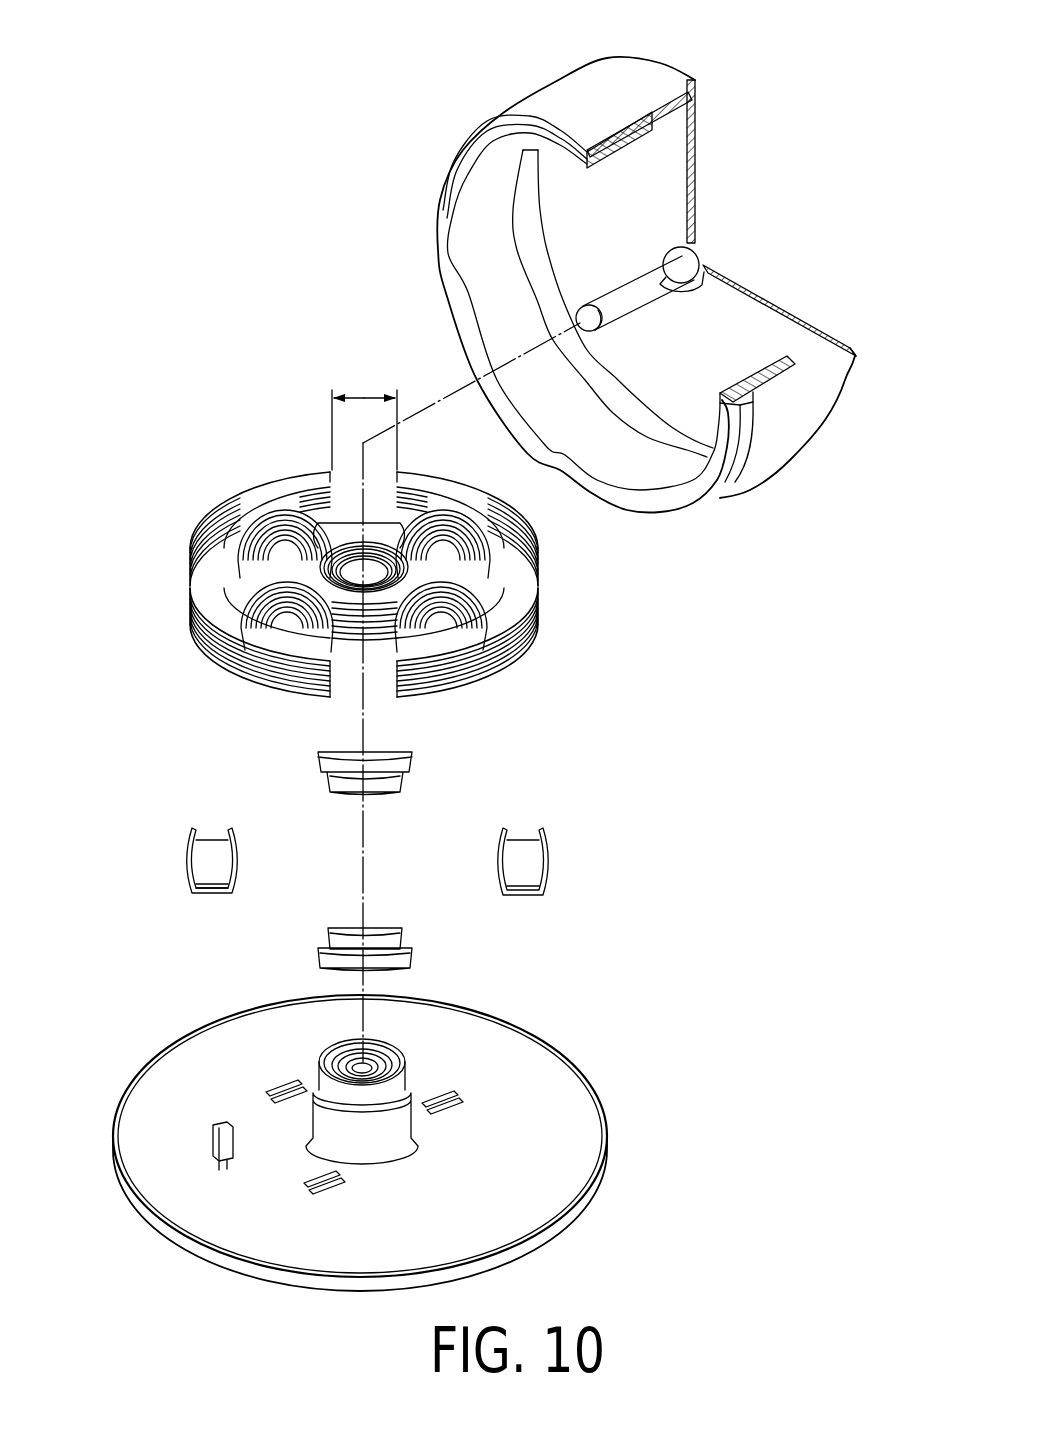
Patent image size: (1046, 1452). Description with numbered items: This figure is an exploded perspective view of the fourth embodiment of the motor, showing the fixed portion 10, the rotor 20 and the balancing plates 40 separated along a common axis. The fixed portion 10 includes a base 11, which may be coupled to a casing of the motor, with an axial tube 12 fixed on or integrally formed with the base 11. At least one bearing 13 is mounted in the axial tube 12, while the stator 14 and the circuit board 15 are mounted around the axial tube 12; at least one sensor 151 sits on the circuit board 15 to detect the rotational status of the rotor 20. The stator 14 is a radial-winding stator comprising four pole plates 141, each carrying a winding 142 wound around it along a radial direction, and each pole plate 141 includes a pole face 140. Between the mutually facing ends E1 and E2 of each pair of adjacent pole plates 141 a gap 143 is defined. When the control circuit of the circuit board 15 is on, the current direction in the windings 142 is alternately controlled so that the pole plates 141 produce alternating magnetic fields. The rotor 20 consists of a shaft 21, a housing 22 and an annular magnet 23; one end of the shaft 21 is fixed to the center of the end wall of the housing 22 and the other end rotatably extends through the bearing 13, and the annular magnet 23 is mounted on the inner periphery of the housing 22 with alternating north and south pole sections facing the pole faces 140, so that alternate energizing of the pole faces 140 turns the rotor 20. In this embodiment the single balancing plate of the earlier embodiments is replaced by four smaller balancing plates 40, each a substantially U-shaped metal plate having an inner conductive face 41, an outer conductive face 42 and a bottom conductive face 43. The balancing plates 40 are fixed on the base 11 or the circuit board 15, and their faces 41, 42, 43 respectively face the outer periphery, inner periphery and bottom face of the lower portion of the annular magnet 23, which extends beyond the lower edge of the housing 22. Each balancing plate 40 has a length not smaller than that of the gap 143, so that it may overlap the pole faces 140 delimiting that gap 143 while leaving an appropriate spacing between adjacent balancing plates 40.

The fixed portion 10 is at (757, 1267).
The base 11 is at (548, 1237).
The axial tube 12 is at (393, 1088).
The bearing 13 is at (382, 1062).
The stator 14 is at (703, 617).
The circuit board 15 is at (568, 1125).
The sensor 151 is at (213, 1122).
The pole face 140 is at (207, 636).
The pole plate 141 is at (470, 600).
The winding 142 is at (418, 557).
The gap 143 is at (358, 378).
The rotor 20 is at (405, 168).
The shaft 21 is at (642, 298).
The housing 22 is at (648, 104).
The annular magnet 23 is at (650, 132).
The balancing plate 40 is at (158, 828).
The inner conductive face 41 is at (236, 882).
The outer conductive face 42 is at (187, 880).
The bottom conductive face 43 is at (213, 895).
The end of pole plate E1 is at (398, 470).
The end of pole plate E2 is at (332, 470).